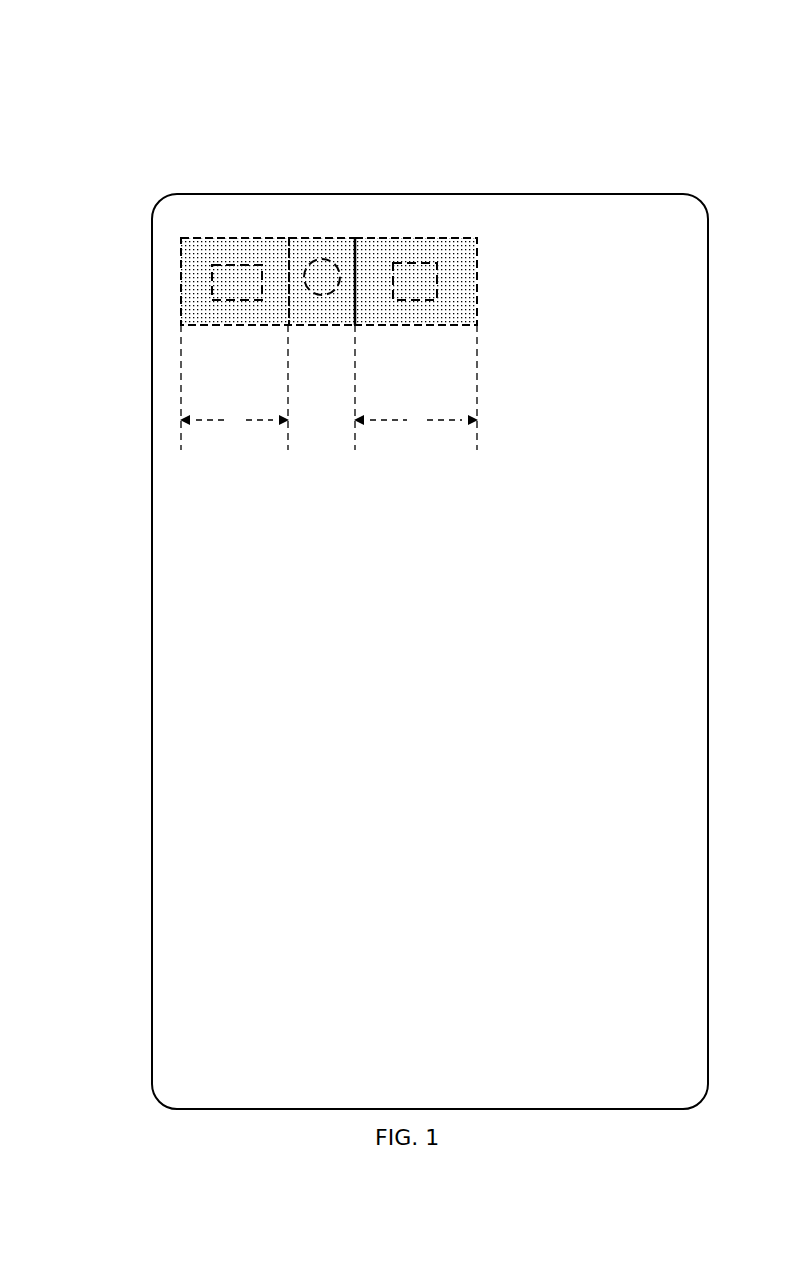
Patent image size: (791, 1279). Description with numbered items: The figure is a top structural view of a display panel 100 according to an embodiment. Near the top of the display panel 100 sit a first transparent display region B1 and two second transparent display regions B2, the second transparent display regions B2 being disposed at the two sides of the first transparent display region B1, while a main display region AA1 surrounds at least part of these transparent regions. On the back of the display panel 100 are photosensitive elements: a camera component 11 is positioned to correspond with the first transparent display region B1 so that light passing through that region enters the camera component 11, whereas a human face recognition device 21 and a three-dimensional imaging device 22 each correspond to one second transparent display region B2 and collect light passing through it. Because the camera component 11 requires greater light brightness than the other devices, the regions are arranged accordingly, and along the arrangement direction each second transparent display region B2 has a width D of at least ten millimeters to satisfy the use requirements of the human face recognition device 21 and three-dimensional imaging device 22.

The display panel 100 is at (455, 558).
The main display region AA1 is at (430, 651).
The first transparent display region B1 is at (340, 248).
The second transparent display region B2 is at (262, 248).
The camera component 11 is at (326, 297).
The human face recognition device 21 is at (212, 283).
The three-dimensional imaging device 22 is at (437, 278).
The width of the second transparent display region D is at (329, 387).